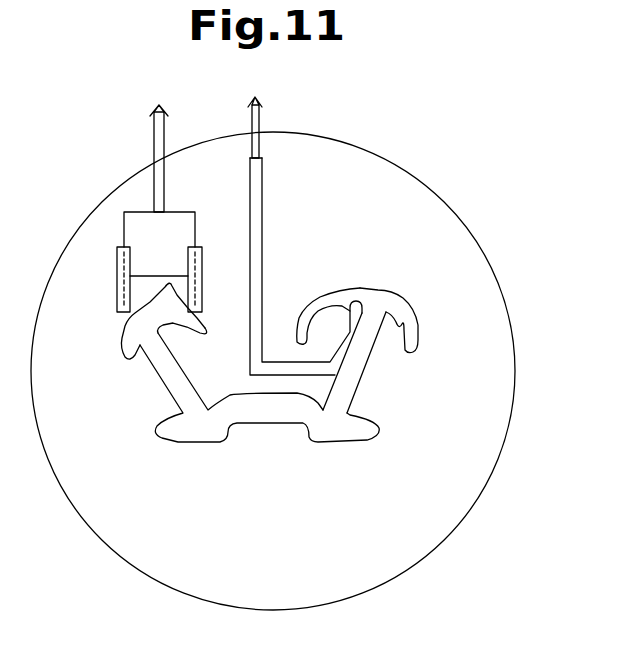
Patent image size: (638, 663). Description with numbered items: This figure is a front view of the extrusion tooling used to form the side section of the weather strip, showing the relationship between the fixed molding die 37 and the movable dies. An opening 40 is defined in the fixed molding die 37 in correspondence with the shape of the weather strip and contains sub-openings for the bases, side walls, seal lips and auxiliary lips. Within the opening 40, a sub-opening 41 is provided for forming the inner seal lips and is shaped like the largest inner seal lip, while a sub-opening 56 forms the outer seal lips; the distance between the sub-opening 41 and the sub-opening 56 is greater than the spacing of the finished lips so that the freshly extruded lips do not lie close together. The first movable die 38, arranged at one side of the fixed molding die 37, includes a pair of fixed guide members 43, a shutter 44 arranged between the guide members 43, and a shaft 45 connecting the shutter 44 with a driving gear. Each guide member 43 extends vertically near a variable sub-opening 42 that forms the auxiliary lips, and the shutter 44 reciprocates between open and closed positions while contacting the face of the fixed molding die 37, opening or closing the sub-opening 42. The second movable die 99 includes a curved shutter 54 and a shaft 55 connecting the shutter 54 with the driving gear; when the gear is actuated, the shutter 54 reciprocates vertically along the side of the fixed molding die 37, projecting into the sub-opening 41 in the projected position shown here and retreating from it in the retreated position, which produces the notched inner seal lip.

The fixed molding die 37 is at (512, 401).
The first movable die 38 is at (151, 208).
The opening 40 is at (264, 418).
The sub-opening 41 is at (394, 320).
The variable sub-opening 42 is at (153, 301).
The fixed guide members 43 is at (118, 274).
The shutter 44 is at (133, 228).
The shaft 45 is at (165, 190).
The curved shutter 54 is at (347, 337).
The shaft 55 is at (260, 112).
The sub-opening 56 is at (177, 326).
The second movable die 99 is at (318, 226).